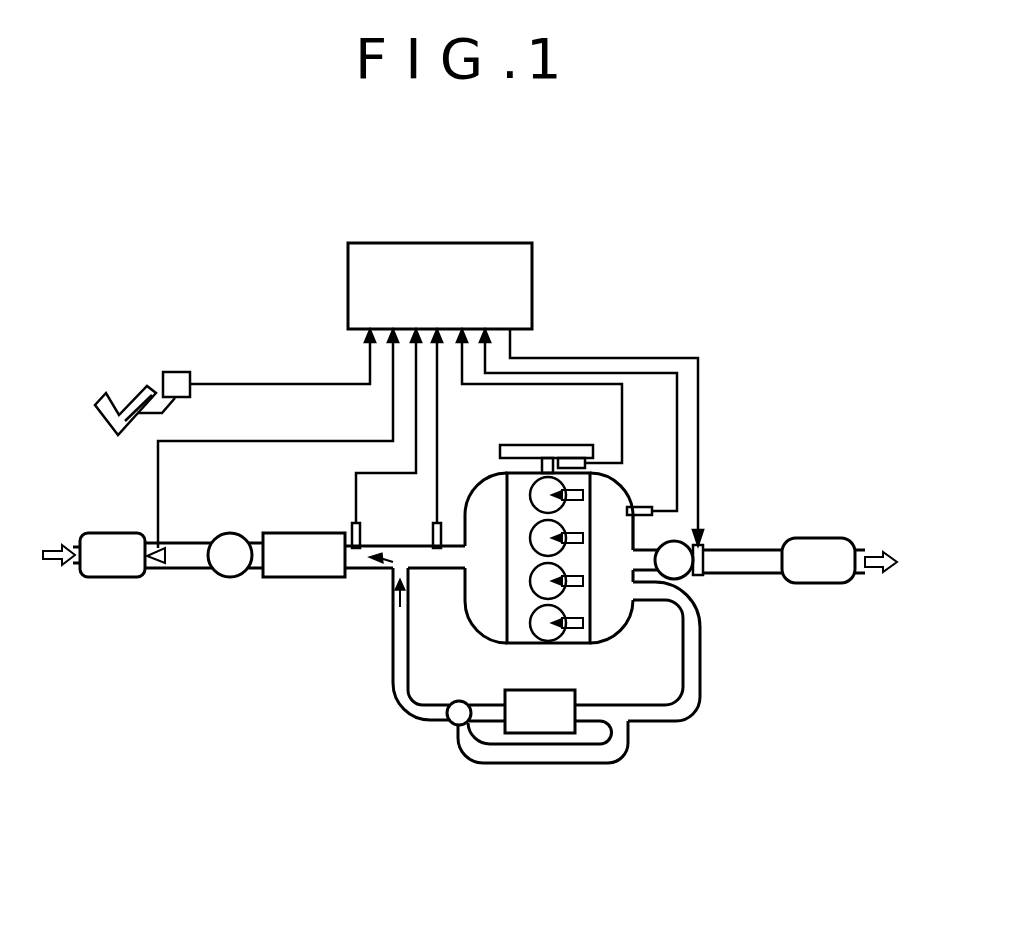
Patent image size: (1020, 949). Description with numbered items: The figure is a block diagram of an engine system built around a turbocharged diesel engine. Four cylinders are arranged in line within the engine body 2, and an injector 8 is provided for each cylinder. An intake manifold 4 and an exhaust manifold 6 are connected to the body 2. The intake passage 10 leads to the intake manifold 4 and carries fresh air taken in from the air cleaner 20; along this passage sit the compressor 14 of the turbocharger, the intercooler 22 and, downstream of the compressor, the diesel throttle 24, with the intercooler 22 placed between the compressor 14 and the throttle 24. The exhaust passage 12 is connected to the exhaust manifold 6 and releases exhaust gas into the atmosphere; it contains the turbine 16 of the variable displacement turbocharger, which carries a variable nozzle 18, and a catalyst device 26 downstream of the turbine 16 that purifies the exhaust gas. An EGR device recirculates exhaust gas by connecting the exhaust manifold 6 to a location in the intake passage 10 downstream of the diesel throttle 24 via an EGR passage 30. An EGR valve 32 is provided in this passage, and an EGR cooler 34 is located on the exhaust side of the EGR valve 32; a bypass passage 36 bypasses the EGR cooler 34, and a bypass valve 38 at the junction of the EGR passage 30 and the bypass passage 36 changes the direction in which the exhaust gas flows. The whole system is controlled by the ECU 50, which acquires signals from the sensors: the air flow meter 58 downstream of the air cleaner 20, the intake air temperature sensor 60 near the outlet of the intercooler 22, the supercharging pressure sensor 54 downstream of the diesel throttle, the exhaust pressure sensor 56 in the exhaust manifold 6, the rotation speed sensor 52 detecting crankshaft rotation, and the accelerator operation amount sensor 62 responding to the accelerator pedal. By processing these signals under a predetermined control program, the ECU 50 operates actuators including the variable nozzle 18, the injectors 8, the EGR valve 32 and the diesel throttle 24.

The body 2 is at (486, 462).
The intake manifold 4 is at (470, 597).
The exhaust manifold 6 is at (607, 635).
The injectors 8 is at (573, 629).
The intake passage 10 is at (180, 568).
The exhaust passage 12 is at (763, 575).
The compressor 14 is at (230, 533).
The turbine 16 is at (696, 583).
The variable nozzle 18 is at (717, 547).
The air cleaner 20 is at (110, 532).
The intercooler 22 is at (300, 533).
The diesel throttle 24 is at (382, 568).
The catalyst device 26 is at (818, 537).
The EGR passage 30 is at (702, 654).
The EGR valve 32 is at (406, 600).
The EGR cooler 34 is at (523, 690).
The bypass passage 36 is at (628, 738).
The bypass valve 38 is at (447, 712).
The ECU 50 is at (532, 264).
The rotation speed sensor 52 is at (567, 447).
The supercharging pressure sensor 54 is at (447, 527).
The exhaust pressure sensor 56 is at (640, 507).
The air flow meter 58 is at (175, 540).
The intake air temperature sensor 60 is at (360, 530).
The accelerator operation amount sensor 62 is at (178, 371).